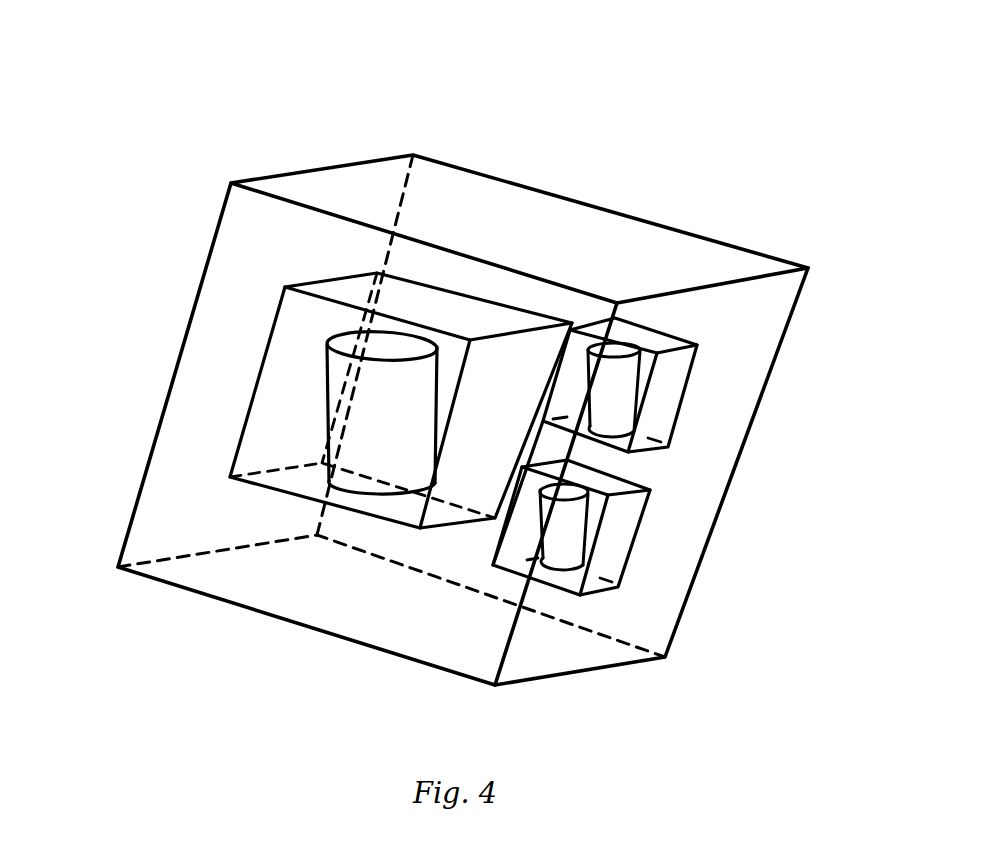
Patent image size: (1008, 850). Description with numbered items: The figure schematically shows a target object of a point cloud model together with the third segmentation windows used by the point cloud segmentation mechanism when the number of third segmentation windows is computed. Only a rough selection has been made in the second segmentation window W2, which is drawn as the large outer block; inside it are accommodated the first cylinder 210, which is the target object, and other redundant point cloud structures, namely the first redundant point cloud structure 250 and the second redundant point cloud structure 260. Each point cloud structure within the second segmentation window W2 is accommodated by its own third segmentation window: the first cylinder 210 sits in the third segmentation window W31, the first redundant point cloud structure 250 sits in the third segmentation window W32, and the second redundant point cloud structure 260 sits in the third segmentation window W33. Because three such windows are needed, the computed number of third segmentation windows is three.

The second segmentation window W2 is at (336, 166).
The third segmentation window W31 is at (273, 327).
The third segmentation window W32 is at (660, 323).
The third segmentation window W33 is at (632, 557).
The first cylinder 210 is at (380, 414).
The first redundant point cloud structure 250 is at (620, 387).
The second redundant point cloud structure 260 is at (563, 520).